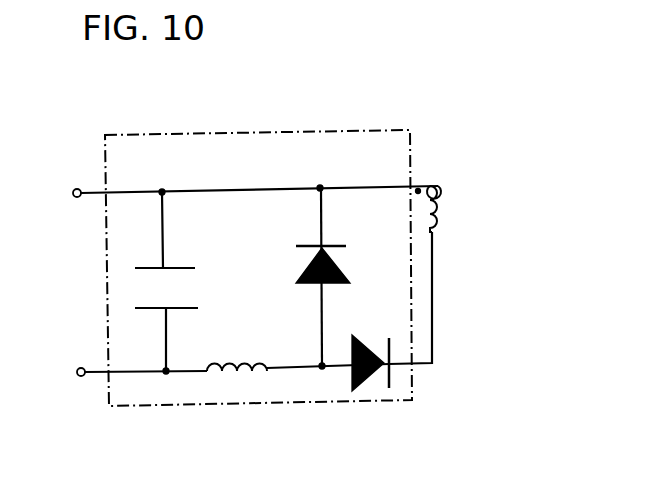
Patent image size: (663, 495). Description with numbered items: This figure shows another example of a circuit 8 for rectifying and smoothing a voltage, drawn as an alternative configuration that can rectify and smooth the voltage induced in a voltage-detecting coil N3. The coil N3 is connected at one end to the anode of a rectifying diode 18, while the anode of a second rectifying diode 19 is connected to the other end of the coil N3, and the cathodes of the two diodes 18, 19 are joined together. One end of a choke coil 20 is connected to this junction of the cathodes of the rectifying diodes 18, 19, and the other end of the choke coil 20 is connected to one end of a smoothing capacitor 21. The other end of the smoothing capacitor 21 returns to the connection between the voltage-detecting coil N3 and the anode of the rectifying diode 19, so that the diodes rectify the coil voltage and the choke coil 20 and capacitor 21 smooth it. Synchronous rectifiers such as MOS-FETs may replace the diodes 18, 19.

The circuit for rectifying and smoothing voltage 8 is at (256, 133).
The smoothing capacitor 21 is at (190, 267).
The rectifying diode 19 is at (305, 272).
The choke coil 20 is at (244, 362).
The rectifying diode 18 is at (372, 352).
The voltage-detecting coil N3 is at (441, 222).